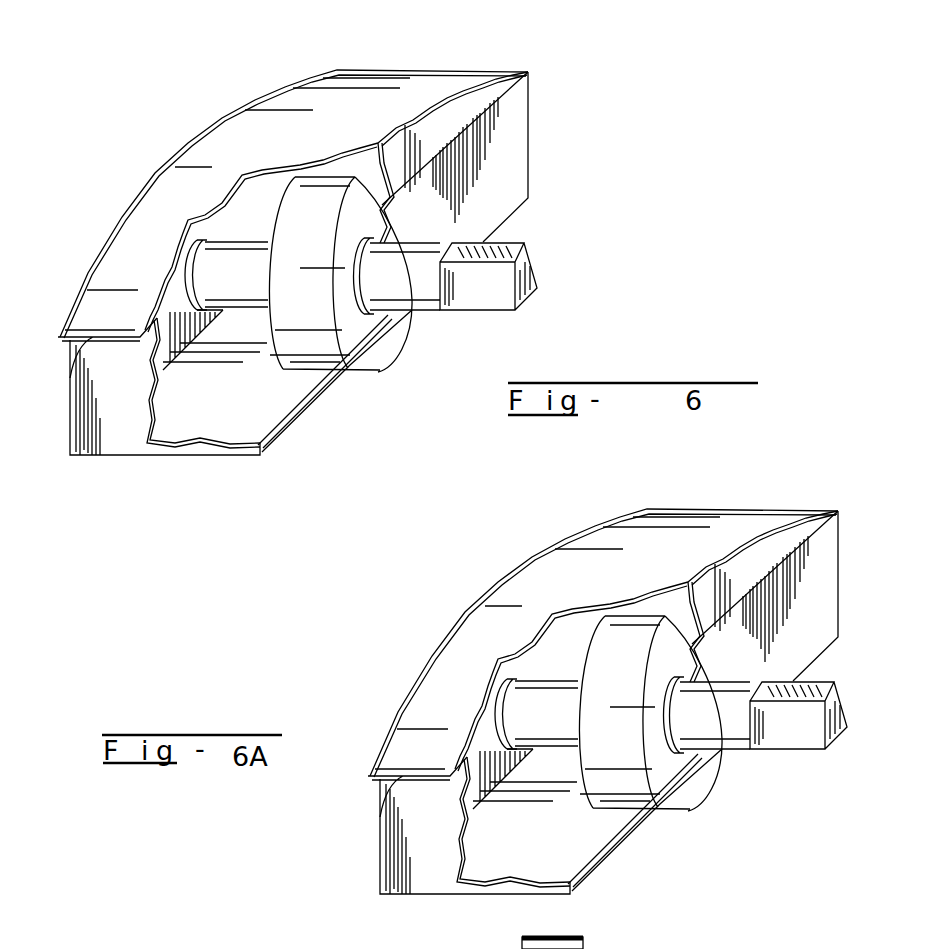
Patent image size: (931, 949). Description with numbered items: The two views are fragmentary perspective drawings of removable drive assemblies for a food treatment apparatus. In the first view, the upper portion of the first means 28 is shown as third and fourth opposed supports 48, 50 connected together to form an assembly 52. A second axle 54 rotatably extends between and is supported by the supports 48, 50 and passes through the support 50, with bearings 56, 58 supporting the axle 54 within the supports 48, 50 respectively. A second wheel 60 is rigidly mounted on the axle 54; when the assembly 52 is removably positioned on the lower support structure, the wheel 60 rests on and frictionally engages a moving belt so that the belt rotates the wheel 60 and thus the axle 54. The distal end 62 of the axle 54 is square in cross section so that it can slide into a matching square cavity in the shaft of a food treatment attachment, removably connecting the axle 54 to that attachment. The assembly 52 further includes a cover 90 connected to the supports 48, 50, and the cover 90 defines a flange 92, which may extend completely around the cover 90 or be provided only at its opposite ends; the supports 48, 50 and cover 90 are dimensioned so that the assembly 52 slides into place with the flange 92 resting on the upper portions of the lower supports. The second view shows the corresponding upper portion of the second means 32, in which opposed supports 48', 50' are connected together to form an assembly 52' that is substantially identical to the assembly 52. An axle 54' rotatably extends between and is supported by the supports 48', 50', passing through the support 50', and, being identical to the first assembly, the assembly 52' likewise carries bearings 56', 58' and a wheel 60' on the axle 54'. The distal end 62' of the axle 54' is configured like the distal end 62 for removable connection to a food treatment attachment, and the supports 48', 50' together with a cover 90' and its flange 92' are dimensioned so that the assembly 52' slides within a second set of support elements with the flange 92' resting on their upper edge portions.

In FIG. 6, the first means 28 is at (550, 66).
In FIG. 6A, the second means 32 is at (823, 489).
In FIG. 6, the third support 48 is at (166, 403).
In FIG. 6, the fourth support 50 is at (335, 392).
In FIG. 6, the assembly 52 is at (509, 157).
In FIG. 6, the second axle 54 is at (254, 302).
In FIG. 6, the bearing 56 is at (124, 275).
In FIG. 6, the bearing 58 is at (382, 342).
In FIG. 6, the second wheel 60 is at (288, 273).
In FIG. 6, the distal end 62 is at (515, 289).
In FIG. 6, the cover 90 is at (293, 198).
In FIG. 6, the flange 92 is at (317, 276).
In FIG. 6A, the opposed support 48' is at (462, 846).
In FIG. 6A, the opposed support 50' is at (645, 824).
In FIG. 6A, the assembly 52' is at (796, 583).
In FIG. 6A, the axle 54' is at (618, 666).
In FIG. 6A, the left bearing collar 56' is at (444, 690).
In FIG. 6A, the right bearing ring 58' is at (701, 766).
In FIG. 6A, the roller 60' is at (639, 685).
In FIG. 6A, the distal end 62' is at (798, 741).
In FIG. 6A, the cover 90' is at (603, 639).
In FIG. 6A, the flange 92' is at (638, 738).